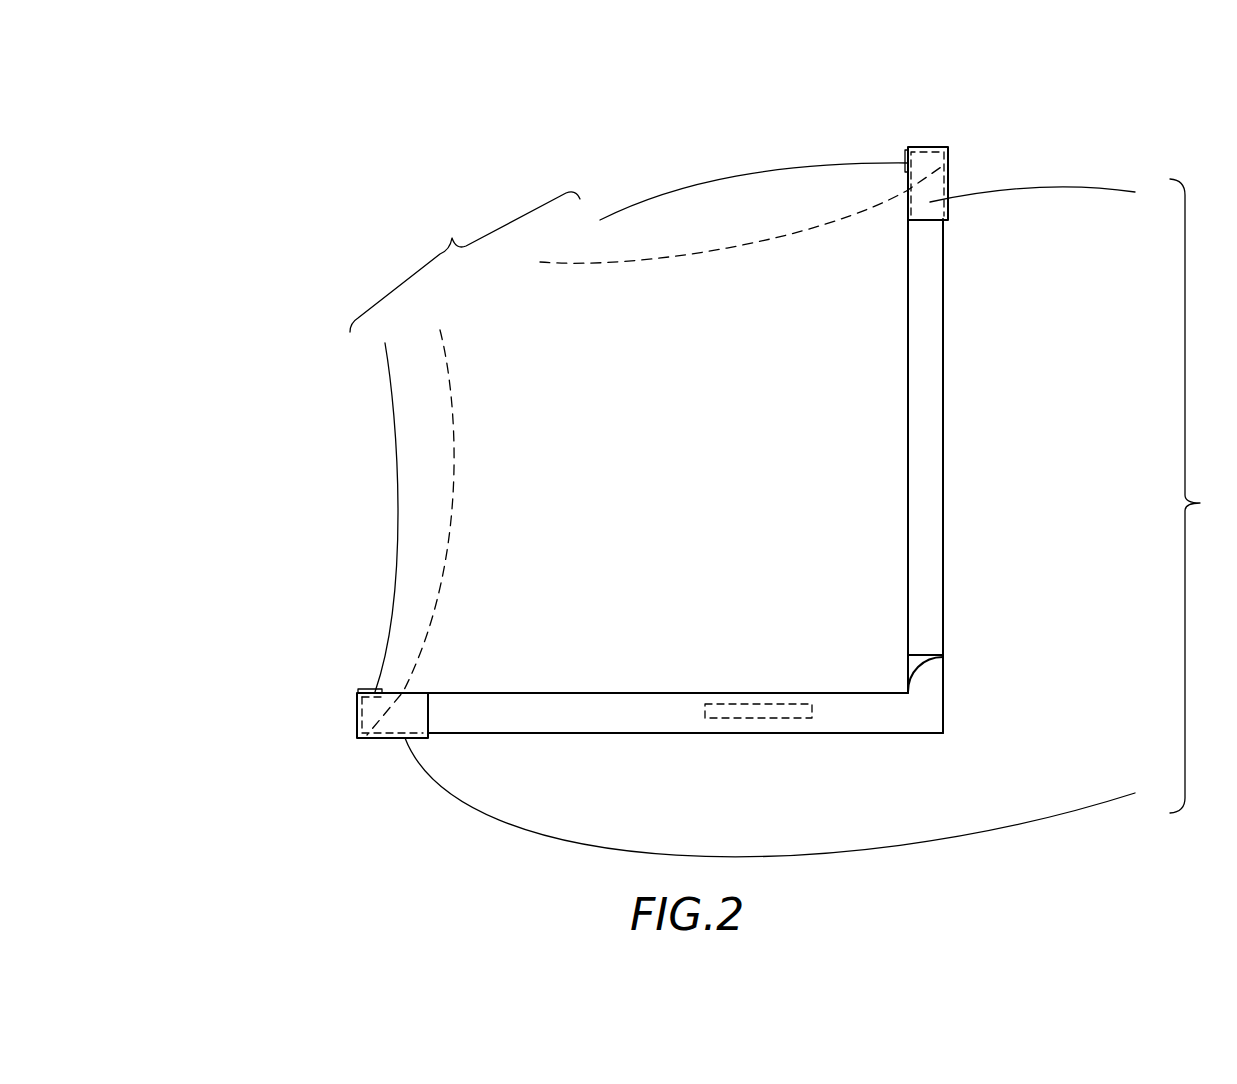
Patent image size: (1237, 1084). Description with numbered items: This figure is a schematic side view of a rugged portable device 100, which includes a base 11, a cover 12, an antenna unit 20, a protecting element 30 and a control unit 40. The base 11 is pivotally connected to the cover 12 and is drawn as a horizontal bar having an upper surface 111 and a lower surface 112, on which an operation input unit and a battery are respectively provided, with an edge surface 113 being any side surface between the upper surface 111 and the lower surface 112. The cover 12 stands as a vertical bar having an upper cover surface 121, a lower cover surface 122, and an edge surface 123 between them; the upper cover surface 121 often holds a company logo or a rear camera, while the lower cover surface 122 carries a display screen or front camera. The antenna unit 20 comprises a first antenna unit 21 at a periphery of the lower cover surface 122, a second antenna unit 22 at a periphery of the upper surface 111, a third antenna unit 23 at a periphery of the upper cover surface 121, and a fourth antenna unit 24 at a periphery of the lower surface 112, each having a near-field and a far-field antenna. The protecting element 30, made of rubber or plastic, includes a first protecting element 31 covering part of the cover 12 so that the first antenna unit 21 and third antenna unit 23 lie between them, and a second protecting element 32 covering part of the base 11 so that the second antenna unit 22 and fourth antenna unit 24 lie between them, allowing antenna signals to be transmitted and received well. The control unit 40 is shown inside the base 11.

The rugged portable device 100 is at (236, 155).
The base 11 is at (660, 712).
The upper surface 111 is at (543, 692).
The lower surface 112 is at (582, 735).
The edge surface 113 is at (360, 708).
The cover 12 is at (920, 505).
The upper cover surface 121 is at (943, 428).
The lower cover surface 122 is at (908, 401).
The edge surface 123 is at (921, 152).
The antenna unit 20 is at (647, 449).
The first antenna unit 21 is at (735, 200).
The second antenna unit 22 is at (386, 503).
The third antenna unit 23 is at (721, 221).
The fourth antenna unit 24 is at (412, 510).
The protecting element 30 is at (820, 518).
The first protecting element 31 is at (1052, 198).
The second protecting element 32 is at (788, 797).
The control unit 40 is at (763, 712).